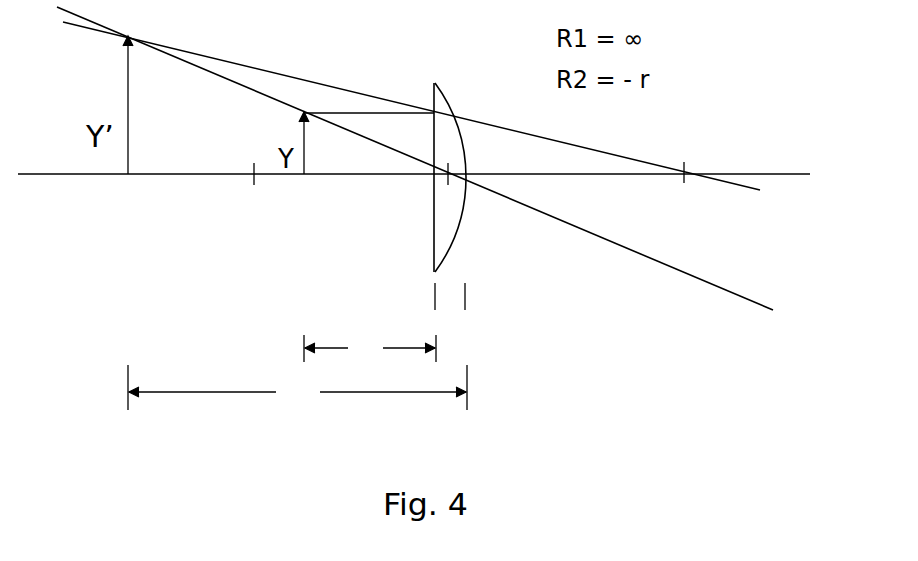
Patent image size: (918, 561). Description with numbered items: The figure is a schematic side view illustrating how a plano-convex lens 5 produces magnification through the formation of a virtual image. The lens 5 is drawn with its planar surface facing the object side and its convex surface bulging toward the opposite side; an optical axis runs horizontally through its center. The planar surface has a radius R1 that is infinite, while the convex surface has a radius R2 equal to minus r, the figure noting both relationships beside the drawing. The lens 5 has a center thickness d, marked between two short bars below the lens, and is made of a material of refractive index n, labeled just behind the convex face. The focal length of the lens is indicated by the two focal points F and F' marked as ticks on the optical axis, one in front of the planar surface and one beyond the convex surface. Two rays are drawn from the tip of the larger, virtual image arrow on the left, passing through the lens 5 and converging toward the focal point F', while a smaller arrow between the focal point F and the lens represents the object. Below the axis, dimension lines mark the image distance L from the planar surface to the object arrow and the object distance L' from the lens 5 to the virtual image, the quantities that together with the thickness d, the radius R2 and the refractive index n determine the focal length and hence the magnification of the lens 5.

The plano-convex lens 5 is at (456, 171).
The radius of the plano part R1 is at (424, 177).
The radius of the convex part R2 is at (471, 177).
The refractive index n is at (471, 189).
The thickness d is at (450, 298).
The focal point F is at (259, 191).
The focal point F' is at (688, 189).
The image distance L is at (370, 348).
The object distance L' is at (297, 387).